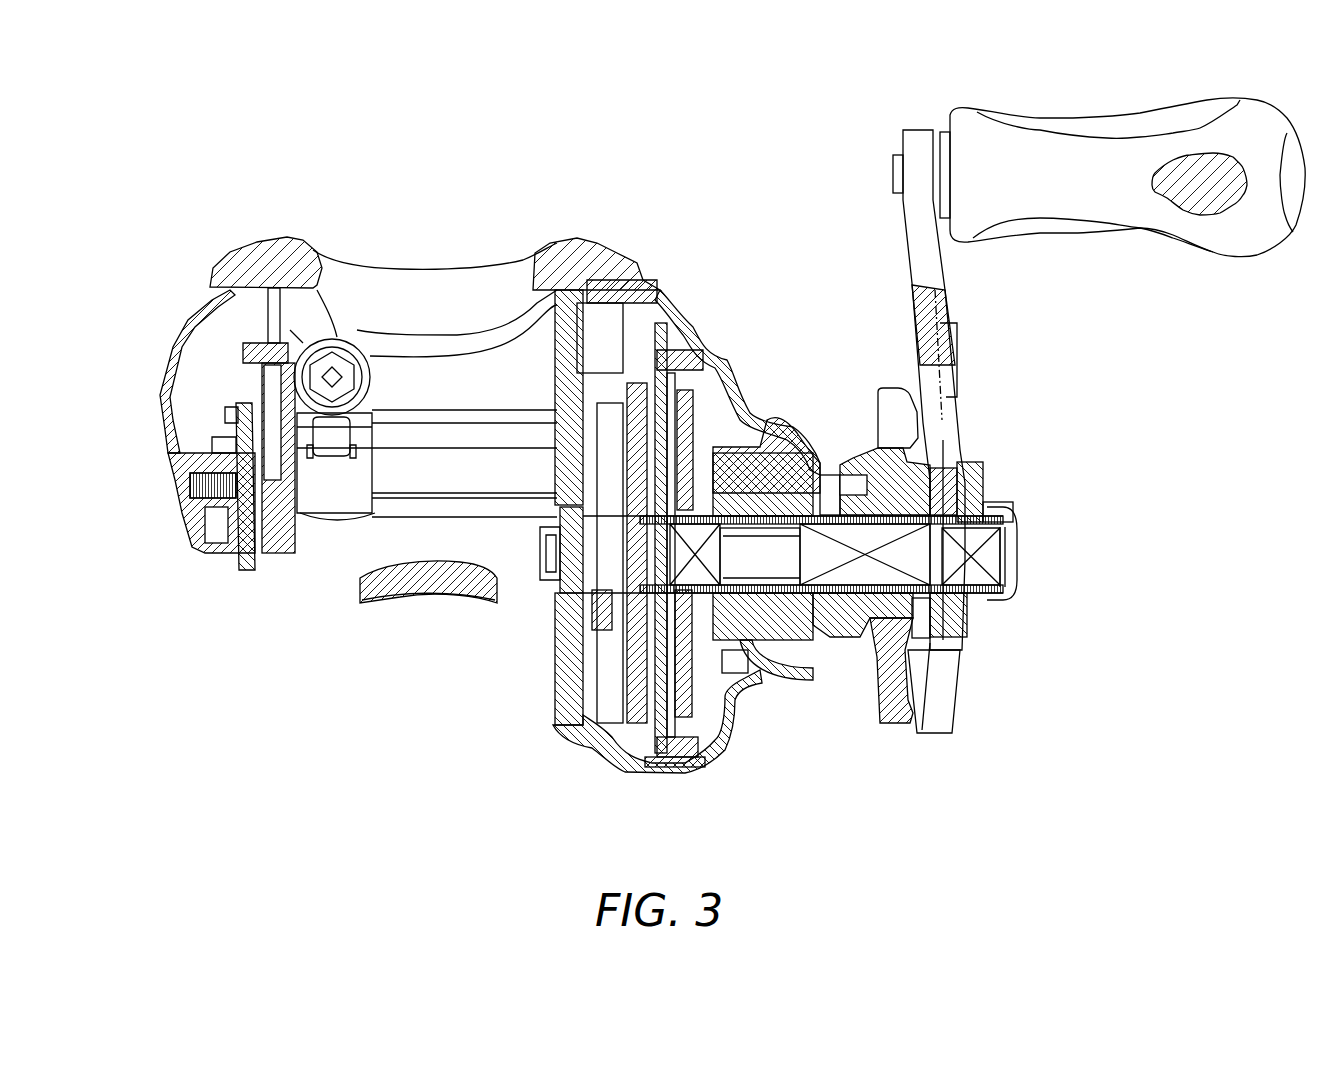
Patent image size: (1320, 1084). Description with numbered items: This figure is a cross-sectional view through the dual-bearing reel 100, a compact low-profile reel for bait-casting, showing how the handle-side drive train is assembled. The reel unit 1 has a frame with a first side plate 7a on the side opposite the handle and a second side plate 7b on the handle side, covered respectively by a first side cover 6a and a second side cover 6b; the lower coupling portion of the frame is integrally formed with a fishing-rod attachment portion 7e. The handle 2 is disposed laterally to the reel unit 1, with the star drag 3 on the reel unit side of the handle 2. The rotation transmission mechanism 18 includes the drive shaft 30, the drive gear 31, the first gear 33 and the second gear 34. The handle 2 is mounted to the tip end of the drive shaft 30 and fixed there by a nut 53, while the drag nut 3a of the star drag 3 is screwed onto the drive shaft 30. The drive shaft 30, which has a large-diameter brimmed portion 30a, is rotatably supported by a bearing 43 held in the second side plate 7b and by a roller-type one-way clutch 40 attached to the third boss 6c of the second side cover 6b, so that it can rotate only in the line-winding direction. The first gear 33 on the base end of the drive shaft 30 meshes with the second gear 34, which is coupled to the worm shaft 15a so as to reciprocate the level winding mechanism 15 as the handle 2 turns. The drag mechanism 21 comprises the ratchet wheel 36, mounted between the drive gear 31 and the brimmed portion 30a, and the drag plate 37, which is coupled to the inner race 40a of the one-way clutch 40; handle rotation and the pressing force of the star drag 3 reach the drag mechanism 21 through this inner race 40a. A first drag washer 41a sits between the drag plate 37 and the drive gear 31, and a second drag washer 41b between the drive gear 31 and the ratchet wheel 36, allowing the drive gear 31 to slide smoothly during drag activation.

The reel unit 1 is at (693, 192).
The handle 2 is at (936, 275).
The star drag 3 is at (890, 395).
The drag nut 3a is at (880, 485).
The first side cover 6a is at (185, 330).
The second side cover 6b is at (705, 343).
The third boss 6c is at (775, 435).
The first side plate 7a is at (279, 565).
The second side plate 7b is at (547, 737).
The fishing-rod attachment portion 7e is at (423, 600).
The level winding mechanism 15 is at (337, 335).
The worm shaft 15a is at (400, 435).
The rotation transmission mechanism 18 is at (683, 767).
The drag mechanism 21 is at (703, 698).
The drive shaft 30 is at (1012, 528).
The brimmed portion 30a is at (550, 557).
The drive gear 31 is at (667, 767).
The first gear 33 is at (548, 625).
The second gear 34 is at (608, 420).
The ratchet wheel 36 is at (617, 755).
The drag plate 37 is at (697, 712).
The one-way clutch 40 is at (791, 630).
The inner race 40a is at (777, 628).
The first drag washer 41a is at (690, 768).
The second drag washer 41b is at (658, 748).
The bearing 43 is at (557, 490).
The nut 53 is at (1000, 490).
The dual-bearing reel 100 is at (1099, 415).